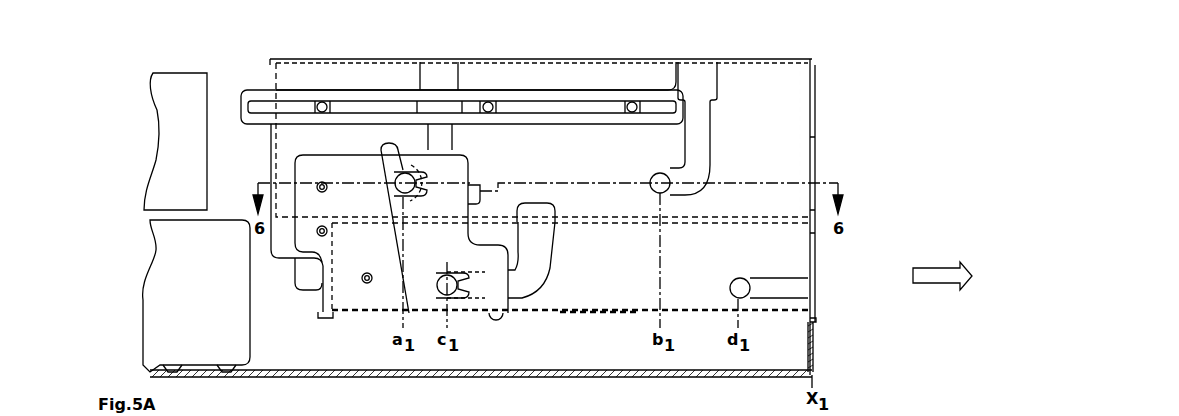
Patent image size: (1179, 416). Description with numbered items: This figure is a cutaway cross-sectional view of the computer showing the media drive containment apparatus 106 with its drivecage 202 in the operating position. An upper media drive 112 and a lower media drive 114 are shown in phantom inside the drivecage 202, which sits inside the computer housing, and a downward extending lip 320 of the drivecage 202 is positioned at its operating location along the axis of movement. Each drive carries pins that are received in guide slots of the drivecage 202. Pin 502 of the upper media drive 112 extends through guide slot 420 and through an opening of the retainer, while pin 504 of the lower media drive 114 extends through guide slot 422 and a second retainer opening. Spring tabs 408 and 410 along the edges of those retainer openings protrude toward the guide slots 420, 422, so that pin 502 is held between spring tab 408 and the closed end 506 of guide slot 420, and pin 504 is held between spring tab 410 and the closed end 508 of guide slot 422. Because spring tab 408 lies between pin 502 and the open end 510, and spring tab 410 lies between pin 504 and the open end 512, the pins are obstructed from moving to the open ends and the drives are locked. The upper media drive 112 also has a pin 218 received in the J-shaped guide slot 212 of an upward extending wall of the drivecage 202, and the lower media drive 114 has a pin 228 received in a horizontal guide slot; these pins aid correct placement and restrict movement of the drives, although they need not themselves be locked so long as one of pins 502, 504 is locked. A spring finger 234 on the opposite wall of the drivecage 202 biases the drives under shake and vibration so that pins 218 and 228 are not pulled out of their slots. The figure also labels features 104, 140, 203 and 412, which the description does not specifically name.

The base 104 is at (816, 343).
The media drive containment apparatus 106 is at (862, 61).
The media drive 112 is at (795, 107).
The media drive 114 is at (800, 232).
The direction of movement arrow 140 is at (932, 284).
The drivecage 202 is at (884, 217).
The carriage bottom plate 203 is at (612, 318).
The guide slot 212 is at (700, 142).
The pin 218 is at (660, 175).
The pin 228 is at (740, 288).
The spring finger 234 is at (777, 288).
The downward extending lip 320 is at (820, 318).
The spring tab 408 is at (425, 185).
The spring tab 410 is at (470, 285).
The tab 412 is at (482, 203).
The guide slot 420 is at (437, 135).
The guide slot 422 is at (537, 246).
The pin 502 is at (399, 157).
The pin 504 is at (446, 282).
The closed end 506 is at (393, 183).
The closed end 508 is at (440, 283).
The open end 510 is at (440, 78).
The open end 512 is at (545, 212).